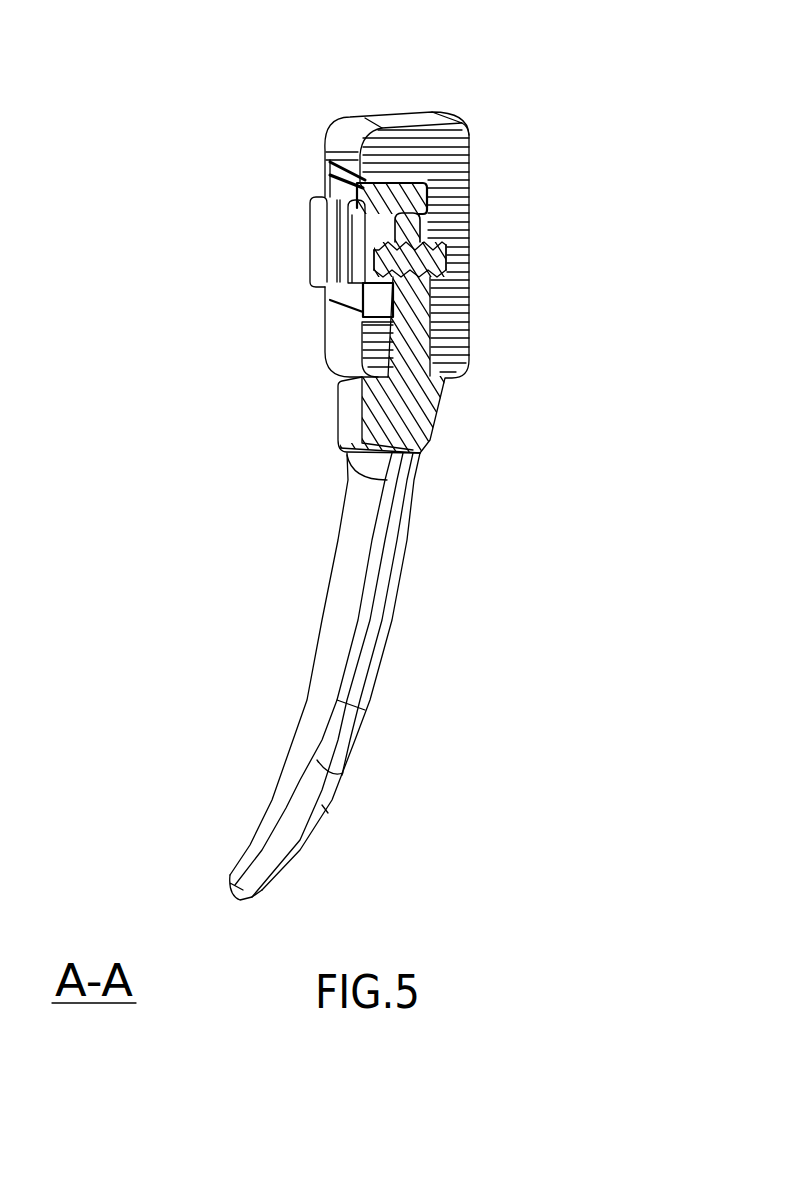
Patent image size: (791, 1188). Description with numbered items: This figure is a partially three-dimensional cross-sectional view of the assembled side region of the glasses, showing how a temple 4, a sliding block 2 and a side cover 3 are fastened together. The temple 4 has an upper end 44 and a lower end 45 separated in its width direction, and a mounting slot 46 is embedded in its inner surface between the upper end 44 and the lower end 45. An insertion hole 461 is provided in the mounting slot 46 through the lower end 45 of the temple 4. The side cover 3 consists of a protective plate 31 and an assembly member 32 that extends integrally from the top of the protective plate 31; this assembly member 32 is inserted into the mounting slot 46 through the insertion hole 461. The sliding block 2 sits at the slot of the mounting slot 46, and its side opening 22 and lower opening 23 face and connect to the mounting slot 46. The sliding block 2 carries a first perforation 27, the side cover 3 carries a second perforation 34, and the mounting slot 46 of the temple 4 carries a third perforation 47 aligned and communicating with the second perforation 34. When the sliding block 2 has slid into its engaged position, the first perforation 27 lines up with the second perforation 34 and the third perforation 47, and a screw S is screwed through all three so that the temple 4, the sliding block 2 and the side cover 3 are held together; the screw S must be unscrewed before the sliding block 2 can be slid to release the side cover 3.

The sliding block 2 is at (316, 199).
The side cover 3 is at (403, 560).
The temple 4 is at (458, 207).
The side opening 22 is at (410, 257).
The lower opening 23 is at (333, 323).
The first perforation 27 is at (358, 226).
The protective plate 31 is at (340, 633).
The assembly member 32 is at (415, 322).
The second perforation 34 is at (412, 192).
The upper end 44 is at (402, 118).
The lower end 45 is at (380, 478).
The mounting slot 46 is at (452, 257).
The third perforation 47 is at (448, 265).
The insertion hole 461 is at (453, 378).
The screw S is at (326, 272).